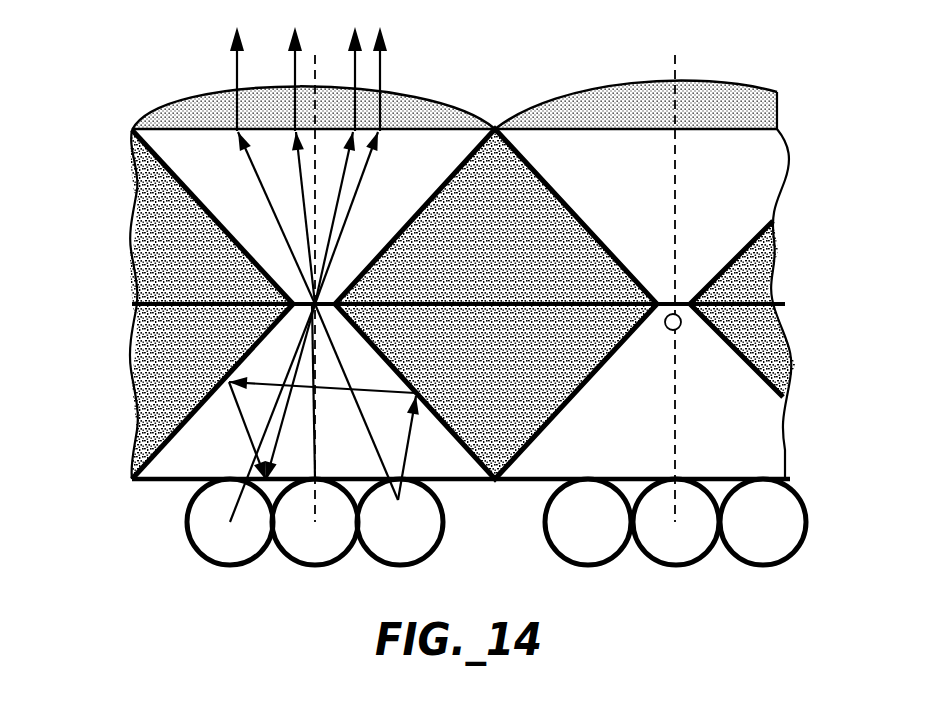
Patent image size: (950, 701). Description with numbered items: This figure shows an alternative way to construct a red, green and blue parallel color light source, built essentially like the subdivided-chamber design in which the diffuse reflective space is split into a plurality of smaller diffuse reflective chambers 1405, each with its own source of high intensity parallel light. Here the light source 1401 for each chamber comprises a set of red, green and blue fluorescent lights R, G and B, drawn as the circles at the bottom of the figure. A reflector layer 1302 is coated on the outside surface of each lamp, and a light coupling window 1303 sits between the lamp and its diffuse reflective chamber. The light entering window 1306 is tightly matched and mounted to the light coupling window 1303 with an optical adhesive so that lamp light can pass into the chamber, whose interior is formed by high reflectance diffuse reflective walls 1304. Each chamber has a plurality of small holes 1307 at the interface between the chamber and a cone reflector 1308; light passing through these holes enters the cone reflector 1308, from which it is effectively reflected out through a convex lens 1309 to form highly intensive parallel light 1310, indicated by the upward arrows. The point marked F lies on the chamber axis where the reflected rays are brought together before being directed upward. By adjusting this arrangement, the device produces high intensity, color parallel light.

The reflector layer 1302 is at (182, 553).
The light coupling window 1303 is at (315, 486).
The high reflectance diffuse reflective walls 1304 is at (595, 375).
The light entering window 1306 is at (307, 478).
The small holes 1307 is at (258, 268).
The cone reflector 1308 is at (197, 138).
The convex lens 1309 is at (708, 93).
The parallel light 1310 is at (383, 68).
The light source 1401 is at (230, 566).
The diffuse reflective chambers 1405 is at (270, 357).
The focal point F is at (681, 322).